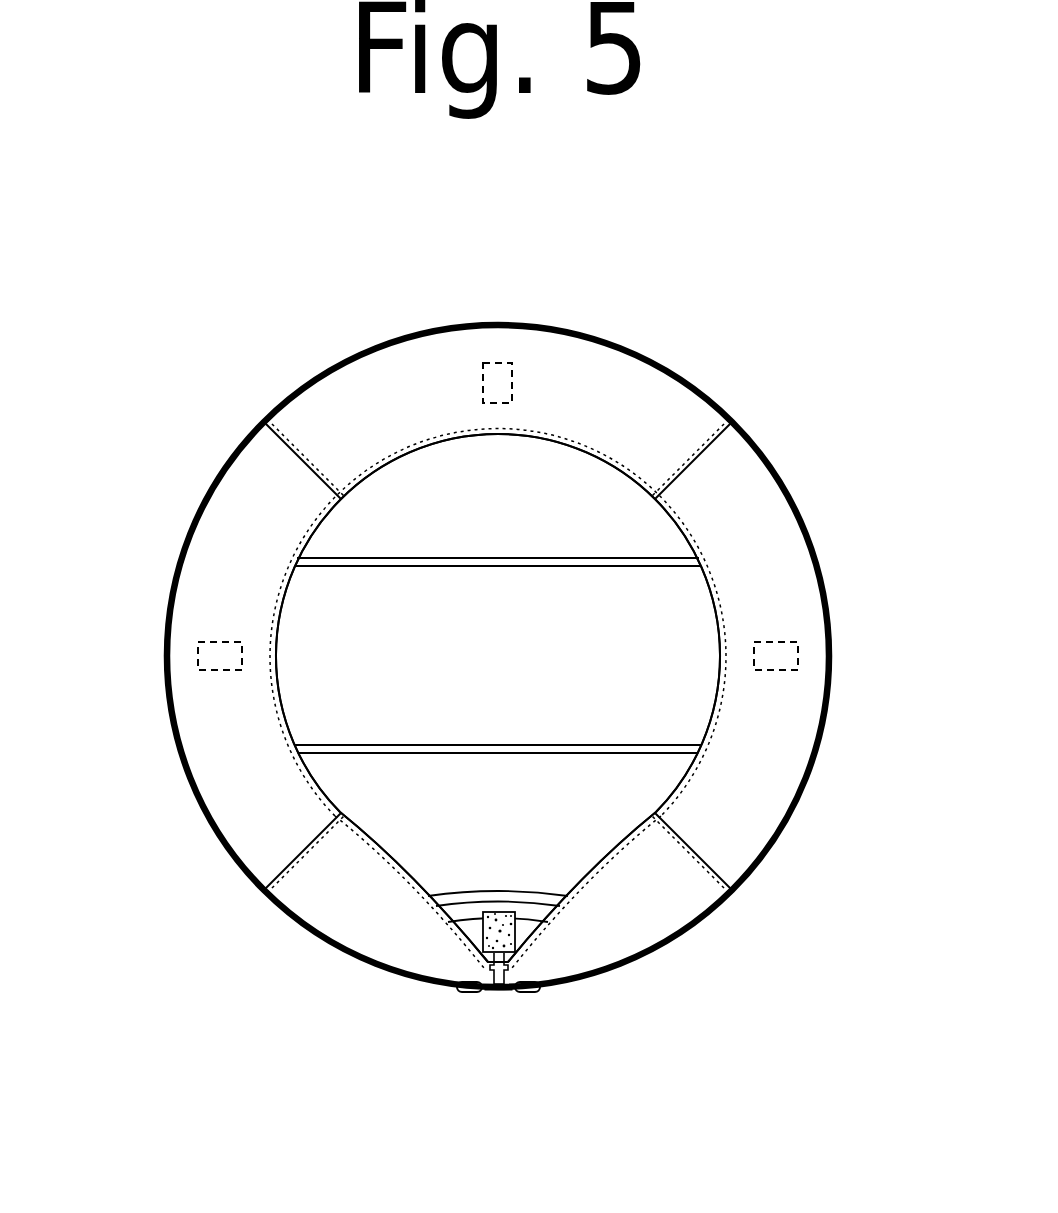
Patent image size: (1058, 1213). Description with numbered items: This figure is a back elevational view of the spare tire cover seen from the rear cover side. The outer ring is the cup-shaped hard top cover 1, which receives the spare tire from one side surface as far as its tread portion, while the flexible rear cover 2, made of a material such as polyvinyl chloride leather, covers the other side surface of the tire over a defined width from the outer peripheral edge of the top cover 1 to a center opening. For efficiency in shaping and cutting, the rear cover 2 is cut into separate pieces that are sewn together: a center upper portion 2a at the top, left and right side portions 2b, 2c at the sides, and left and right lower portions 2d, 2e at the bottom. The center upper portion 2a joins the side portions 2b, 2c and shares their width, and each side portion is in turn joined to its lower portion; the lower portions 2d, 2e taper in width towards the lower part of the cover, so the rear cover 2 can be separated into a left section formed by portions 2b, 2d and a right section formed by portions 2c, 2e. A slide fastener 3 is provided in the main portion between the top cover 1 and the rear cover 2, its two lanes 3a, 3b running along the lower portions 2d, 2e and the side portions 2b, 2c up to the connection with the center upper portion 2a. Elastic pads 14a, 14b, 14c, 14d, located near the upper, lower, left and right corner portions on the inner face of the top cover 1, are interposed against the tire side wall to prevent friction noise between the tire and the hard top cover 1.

The top cover 1 is at (515, 657).
The rear cover 2 is at (596, 462).
The center upper portion 2a is at (408, 428).
The left side portion 2b is at (247, 607).
The right side portion 2c is at (743, 570).
The left lower portion 2d is at (383, 878).
The right lower portion 2e is at (613, 878).
The slide fastener 3 is at (506, 998).
The lane of slide fastener 3a is at (482, 984).
The lane of slide fastener 3b is at (514, 984).
The elastic pad 14a is at (497, 363).
The elastic pad 14b is at (483, 931).
The elastic pad 14c is at (197, 655).
The elastic pad 14d is at (800, 654).